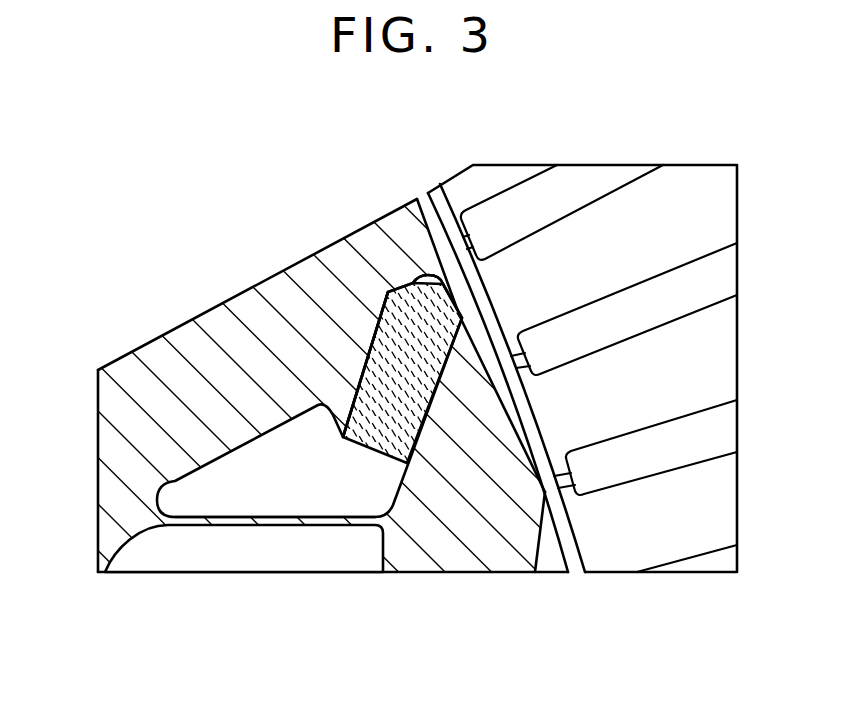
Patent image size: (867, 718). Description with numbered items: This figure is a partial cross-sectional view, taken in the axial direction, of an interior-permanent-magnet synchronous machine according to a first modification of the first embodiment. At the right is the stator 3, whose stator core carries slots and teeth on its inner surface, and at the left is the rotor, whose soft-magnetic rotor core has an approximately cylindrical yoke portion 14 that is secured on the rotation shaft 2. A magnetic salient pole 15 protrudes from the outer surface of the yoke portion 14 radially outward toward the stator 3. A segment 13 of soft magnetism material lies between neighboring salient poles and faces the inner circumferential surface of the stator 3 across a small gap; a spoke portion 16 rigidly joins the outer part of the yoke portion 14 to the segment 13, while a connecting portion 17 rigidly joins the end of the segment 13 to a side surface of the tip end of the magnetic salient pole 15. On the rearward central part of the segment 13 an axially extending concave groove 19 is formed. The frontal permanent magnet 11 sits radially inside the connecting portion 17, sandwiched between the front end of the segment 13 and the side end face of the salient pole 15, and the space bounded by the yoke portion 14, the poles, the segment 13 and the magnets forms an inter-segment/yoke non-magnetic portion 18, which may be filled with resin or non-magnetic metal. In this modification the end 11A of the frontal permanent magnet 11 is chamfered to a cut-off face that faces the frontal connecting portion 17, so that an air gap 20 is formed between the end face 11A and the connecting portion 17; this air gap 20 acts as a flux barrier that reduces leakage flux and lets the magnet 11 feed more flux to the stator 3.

The rotation shaft 2 is at (433, 359).
The stator 3 is at (582, 324).
The frontal permanent magnet 11 is at (377, 318).
The end of frontal permanent magnet 11A is at (390, 290).
The segment 13 is at (455, 547).
The yoke portion 14 is at (125, 470).
The magnetic salient pole 15 is at (262, 308).
The spoke portion 16 is at (322, 522).
The connecting portion 17 is at (455, 283).
The inter-segment/yoke non-magnetic portion 18 is at (227, 487).
The concave groove 19 is at (548, 560).
The air gap 20 is at (433, 277).